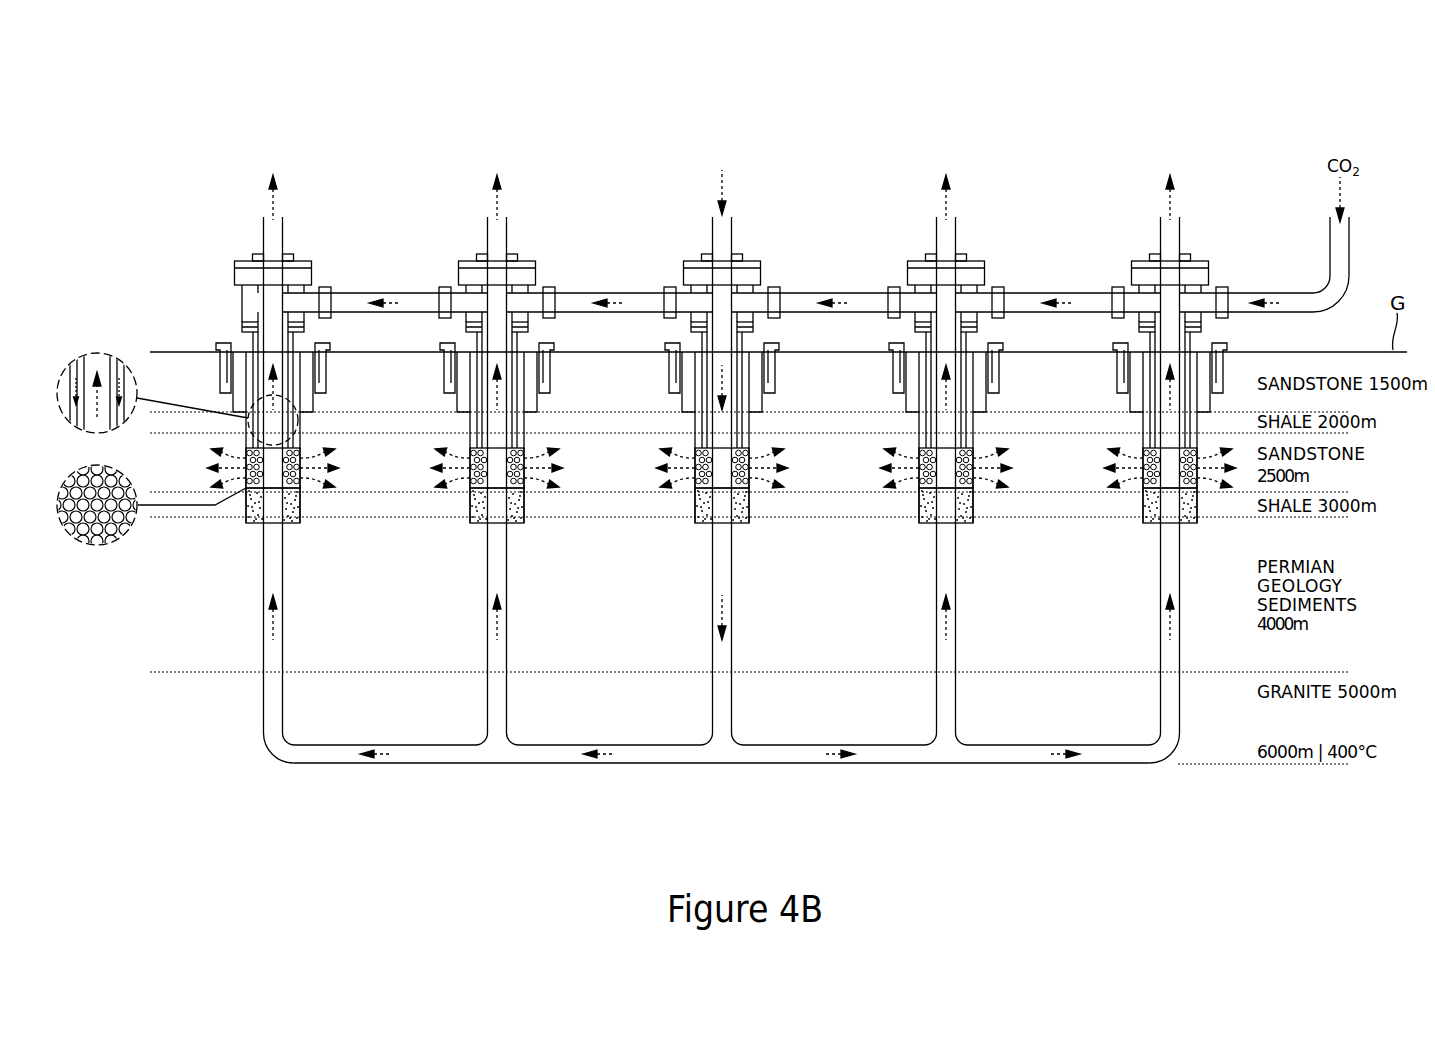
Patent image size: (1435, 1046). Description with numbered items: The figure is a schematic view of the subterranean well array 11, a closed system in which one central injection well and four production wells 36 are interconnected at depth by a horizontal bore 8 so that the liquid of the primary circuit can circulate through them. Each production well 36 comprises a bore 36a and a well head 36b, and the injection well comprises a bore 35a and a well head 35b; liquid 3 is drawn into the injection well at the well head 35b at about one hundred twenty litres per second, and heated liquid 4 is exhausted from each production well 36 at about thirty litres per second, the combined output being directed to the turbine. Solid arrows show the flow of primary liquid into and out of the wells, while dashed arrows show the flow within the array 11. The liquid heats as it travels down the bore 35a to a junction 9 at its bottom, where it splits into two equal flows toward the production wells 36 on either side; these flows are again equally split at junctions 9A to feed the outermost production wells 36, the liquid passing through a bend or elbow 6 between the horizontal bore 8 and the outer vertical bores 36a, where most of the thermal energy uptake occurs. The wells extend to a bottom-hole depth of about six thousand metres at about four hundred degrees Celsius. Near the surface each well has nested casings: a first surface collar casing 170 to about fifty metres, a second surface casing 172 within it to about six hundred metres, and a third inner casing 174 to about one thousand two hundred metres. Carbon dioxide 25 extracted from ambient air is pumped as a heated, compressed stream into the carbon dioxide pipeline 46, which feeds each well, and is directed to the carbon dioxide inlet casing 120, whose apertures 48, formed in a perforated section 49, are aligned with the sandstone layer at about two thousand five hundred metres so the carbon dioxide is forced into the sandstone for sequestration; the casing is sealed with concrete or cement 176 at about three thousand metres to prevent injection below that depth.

The well array 11 is at (1192, 115).
The production well 36 is at (1245, 190).
The heated liquid 4 is at (1215, 233).
The liquid 3 is at (732, 235).
The bore 36a is at (990, 653).
The bore 35a is at (732, 655).
The well head 36b is at (1021, 270).
The well head 35b is at (760, 268).
The carbon dioxide pipeline 46 is at (1270, 293).
The carbon dioxide 25 is at (1349, 235).
The first surface collar casing 170 is at (322, 373).
The second surface casing 172 is at (312, 402).
The apertures 48 is at (1069, 478).
The perforated section 49 is at (108, 533).
The carbon dioxide inlet casing 120 is at (246, 523).
The concrete/cement 176 is at (470, 523).
The third inner casing 174 is at (1143, 523).
The bend or elbow 6 is at (1143, 800).
The horizontal bore 8 is at (658, 765).
The junctions 9A is at (930, 742).
The junction 9 is at (708, 740).